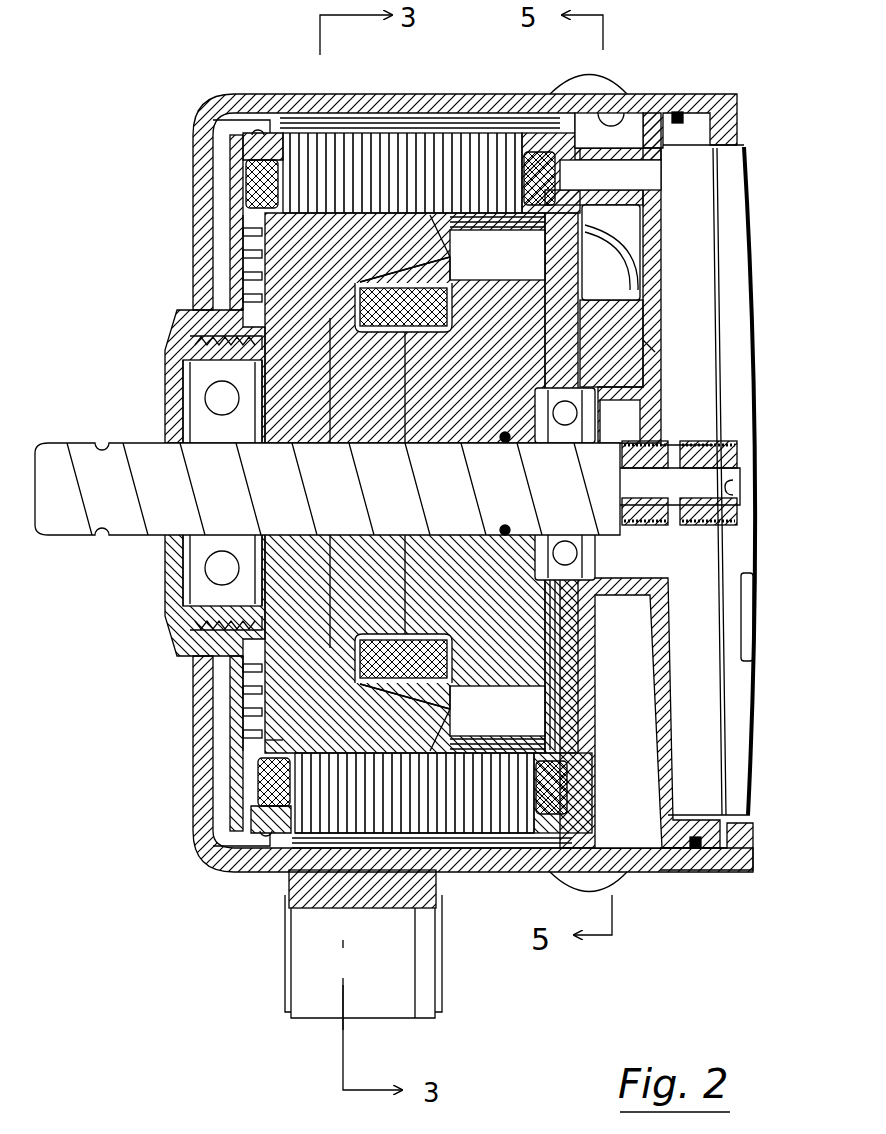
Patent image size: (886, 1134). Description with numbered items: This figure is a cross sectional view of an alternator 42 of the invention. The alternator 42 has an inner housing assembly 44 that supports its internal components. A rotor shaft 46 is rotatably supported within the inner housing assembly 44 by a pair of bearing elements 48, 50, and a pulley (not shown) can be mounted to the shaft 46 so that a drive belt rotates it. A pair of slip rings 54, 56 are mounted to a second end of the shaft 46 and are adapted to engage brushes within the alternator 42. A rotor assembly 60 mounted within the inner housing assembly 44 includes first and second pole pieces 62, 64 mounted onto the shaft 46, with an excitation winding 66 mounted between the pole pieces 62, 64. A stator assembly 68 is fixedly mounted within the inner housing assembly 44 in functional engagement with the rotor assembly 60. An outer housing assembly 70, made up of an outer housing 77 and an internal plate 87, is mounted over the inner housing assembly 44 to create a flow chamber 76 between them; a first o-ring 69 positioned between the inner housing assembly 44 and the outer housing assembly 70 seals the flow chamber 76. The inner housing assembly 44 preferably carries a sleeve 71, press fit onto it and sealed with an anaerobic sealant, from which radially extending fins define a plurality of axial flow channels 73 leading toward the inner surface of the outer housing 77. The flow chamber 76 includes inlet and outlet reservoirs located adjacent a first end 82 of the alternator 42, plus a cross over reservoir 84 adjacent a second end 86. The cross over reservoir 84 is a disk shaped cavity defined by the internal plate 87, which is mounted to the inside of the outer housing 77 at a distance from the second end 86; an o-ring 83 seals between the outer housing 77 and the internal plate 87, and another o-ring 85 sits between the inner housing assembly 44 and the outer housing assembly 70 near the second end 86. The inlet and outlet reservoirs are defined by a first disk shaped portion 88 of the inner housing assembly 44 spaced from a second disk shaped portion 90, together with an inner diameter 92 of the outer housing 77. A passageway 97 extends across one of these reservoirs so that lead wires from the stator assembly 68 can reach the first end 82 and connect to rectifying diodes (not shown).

The alternator 42 is at (198, 975).
The inner housing assembly 44 is at (668, 328).
The rotor shaft 46 is at (170, 513).
The bearing element 48 is at (222, 578).
The bearing element 50 is at (597, 553).
The slip ring 54 is at (650, 445).
The slip ring 56 is at (727, 445).
The rotor assembly 60 is at (383, 736).
The first pole piece 62 is at (363, 807).
The second pole piece 64 is at (513, 650).
The excitation winding 66 is at (430, 685).
The stator assembly 68 is at (300, 812).
The first o-ring 69 is at (682, 113).
The outer housing assembly 70 is at (688, 872).
The sleeve 71 is at (268, 132).
The axial flow channels 73 is at (478, 112).
The flow chamber 76 is at (620, 648).
The outer housing 77 is at (196, 174).
The first end 82 is at (750, 226).
The o-ring 83 is at (232, 342).
The cross over reservoir 84 is at (228, 269).
The o-ring 85 is at (257, 133).
The second end 86 is at (165, 343).
The internal plate 87 is at (232, 222).
The first disk shaped portion 88 is at (590, 300).
The second disk shaped portion 90 is at (655, 355).
The inner diameter 92 is at (612, 118).
The passageway 97 is at (630, 171).